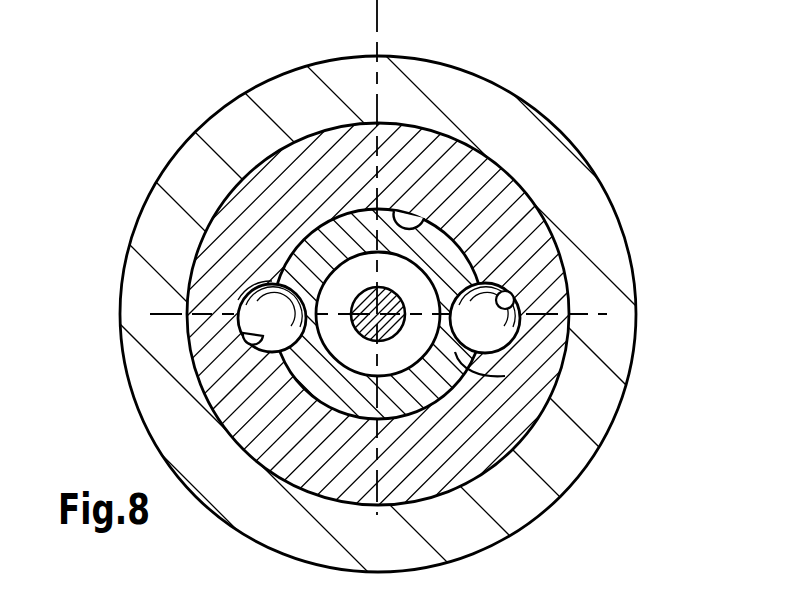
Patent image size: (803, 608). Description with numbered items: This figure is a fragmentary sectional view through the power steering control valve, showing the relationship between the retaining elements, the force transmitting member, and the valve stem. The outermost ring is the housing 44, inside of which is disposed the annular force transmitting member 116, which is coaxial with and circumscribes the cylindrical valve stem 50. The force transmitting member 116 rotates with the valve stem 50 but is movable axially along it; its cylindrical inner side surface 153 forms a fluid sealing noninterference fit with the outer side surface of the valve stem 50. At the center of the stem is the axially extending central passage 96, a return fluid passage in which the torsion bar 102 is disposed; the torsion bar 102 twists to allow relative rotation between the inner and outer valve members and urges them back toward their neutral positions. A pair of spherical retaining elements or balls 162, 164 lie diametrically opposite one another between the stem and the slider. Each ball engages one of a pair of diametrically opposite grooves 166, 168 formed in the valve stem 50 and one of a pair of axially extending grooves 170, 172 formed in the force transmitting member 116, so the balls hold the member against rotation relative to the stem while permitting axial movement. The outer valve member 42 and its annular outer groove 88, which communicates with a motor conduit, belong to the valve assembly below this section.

The housing 44 is at (580, 208).
The force transmitting member 116 is at (525, 184).
The valve stem 50 is at (433, 257).
The cylindrical inner side surface 153 is at (396, 211).
The central passage 96 is at (353, 352).
The torsion bar 102 is at (393, 336).
The spherical retaining element 162 is at (268, 322).
The spherical retaining element 164 is at (487, 335).
The groove 166 is at (283, 290).
The groove 168 is at (505, 376).
The axially extending groove 170 is at (247, 340).
The axially extending groove 172 is at (519, 301).
The outer valve member 42 is at (525, 0).
The annular outer groove 88 is at (126, 8).